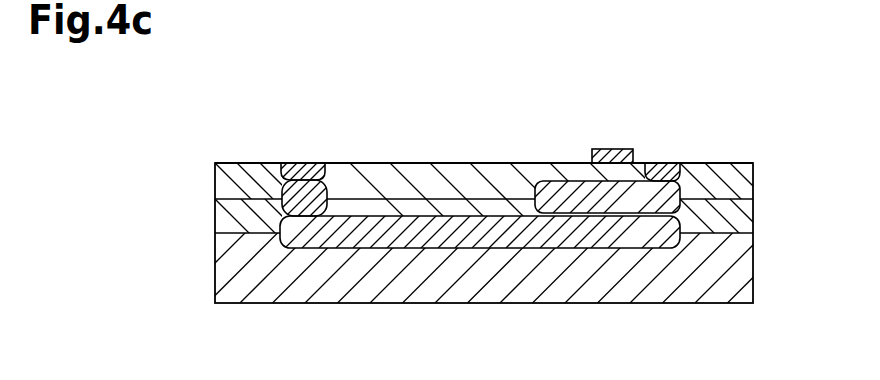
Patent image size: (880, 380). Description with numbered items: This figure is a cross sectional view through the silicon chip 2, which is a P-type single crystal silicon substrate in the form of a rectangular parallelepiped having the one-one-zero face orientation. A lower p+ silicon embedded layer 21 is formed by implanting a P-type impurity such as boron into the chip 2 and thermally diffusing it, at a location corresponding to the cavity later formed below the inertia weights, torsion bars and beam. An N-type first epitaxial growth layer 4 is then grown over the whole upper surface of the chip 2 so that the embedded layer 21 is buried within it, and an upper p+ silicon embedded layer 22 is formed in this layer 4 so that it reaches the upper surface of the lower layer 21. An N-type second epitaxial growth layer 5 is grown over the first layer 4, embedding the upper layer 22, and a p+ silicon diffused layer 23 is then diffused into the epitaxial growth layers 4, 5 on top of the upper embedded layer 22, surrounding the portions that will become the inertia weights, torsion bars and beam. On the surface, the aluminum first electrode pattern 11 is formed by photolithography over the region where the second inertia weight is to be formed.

The silicon chip 2 is at (753, 262).
The first epitaxial growth layer 4 is at (753, 210).
The second epitaxial growth layer 5 is at (753, 173).
The first electrode pattern 11 is at (608, 148).
The lower p+ silicon embedded layer 21 is at (367, 240).
The upper p+ silicon embedded layer 22 is at (297, 187).
The p+ silicon diffused layer 23 is at (315, 168).